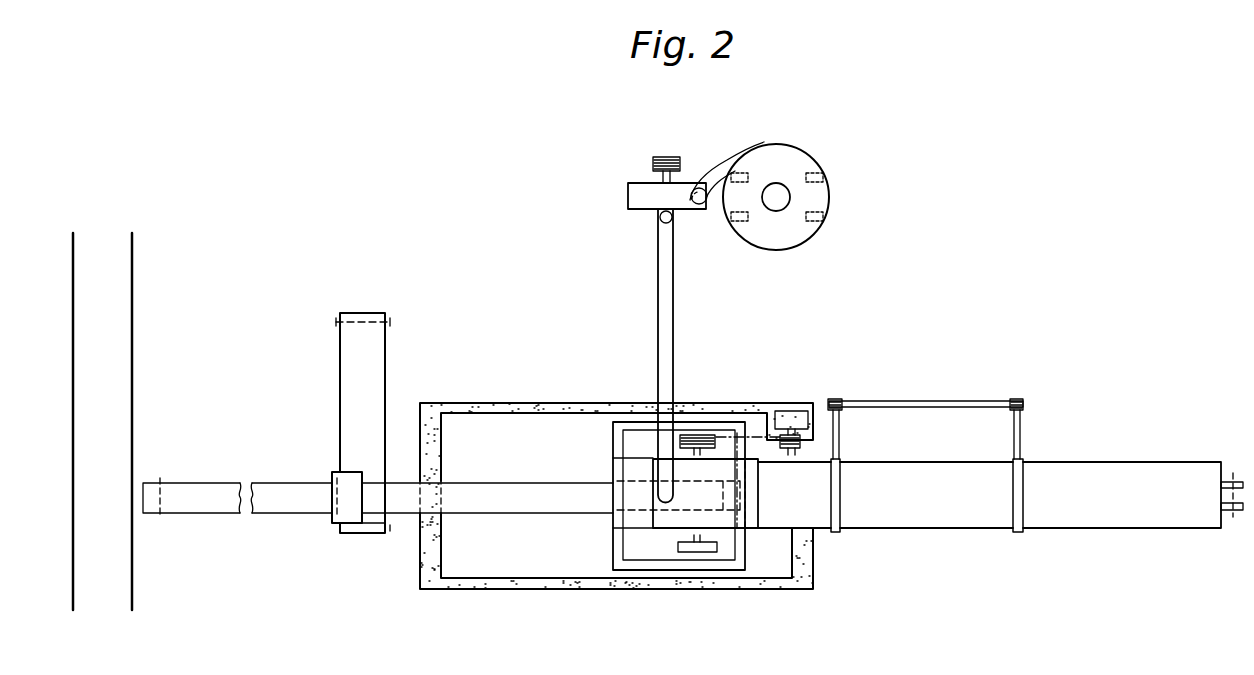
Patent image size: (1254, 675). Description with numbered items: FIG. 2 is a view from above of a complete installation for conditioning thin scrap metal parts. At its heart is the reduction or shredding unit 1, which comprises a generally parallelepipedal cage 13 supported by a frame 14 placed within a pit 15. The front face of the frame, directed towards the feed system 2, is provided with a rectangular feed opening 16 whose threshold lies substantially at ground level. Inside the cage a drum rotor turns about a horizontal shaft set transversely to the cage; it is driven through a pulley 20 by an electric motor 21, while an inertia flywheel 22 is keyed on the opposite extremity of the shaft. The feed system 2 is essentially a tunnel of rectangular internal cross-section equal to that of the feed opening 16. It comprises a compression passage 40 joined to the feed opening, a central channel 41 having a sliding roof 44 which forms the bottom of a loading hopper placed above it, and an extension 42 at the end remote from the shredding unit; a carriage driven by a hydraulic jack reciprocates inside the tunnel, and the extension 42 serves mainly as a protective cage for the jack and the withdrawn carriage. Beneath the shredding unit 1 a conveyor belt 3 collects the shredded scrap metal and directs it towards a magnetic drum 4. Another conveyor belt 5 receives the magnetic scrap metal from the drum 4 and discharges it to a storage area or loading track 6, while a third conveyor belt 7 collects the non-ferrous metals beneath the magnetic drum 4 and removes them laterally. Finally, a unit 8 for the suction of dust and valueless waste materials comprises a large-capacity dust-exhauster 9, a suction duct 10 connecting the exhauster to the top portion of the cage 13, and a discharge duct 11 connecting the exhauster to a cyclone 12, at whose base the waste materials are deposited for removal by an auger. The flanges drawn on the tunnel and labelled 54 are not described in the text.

The shredding unit 1 is at (675, 522).
The feed system 2 is at (977, 530).
The conveyor belt 3 is at (407, 502).
The magnetic drum 4 is at (337, 517).
The conveyor belt 5 is at (219, 490).
The loading track 6 is at (130, 343).
The third conveyor belt 7 is at (350, 379).
The dust extraction unit 8 is at (815, 233).
The dust-exhauster 9 is at (635, 195).
The suction duct 10 is at (660, 273).
The discharge duct 11 is at (711, 175).
The cyclone 12 is at (807, 163).
The cage 13 is at (657, 478).
The frame 14 is at (633, 533).
The pit 15 is at (497, 550).
The feed opening 16 is at (747, 502).
The pulley 20 is at (702, 440).
The electric motor 21 is at (787, 418).
The inertia flywheel 22 is at (710, 547).
The compression passage 40 is at (813, 507).
The channel 41 is at (947, 512).
The extension 42 is at (1168, 512).
The sliding roof 44 is at (918, 422).
The flange 54 is at (837, 503).